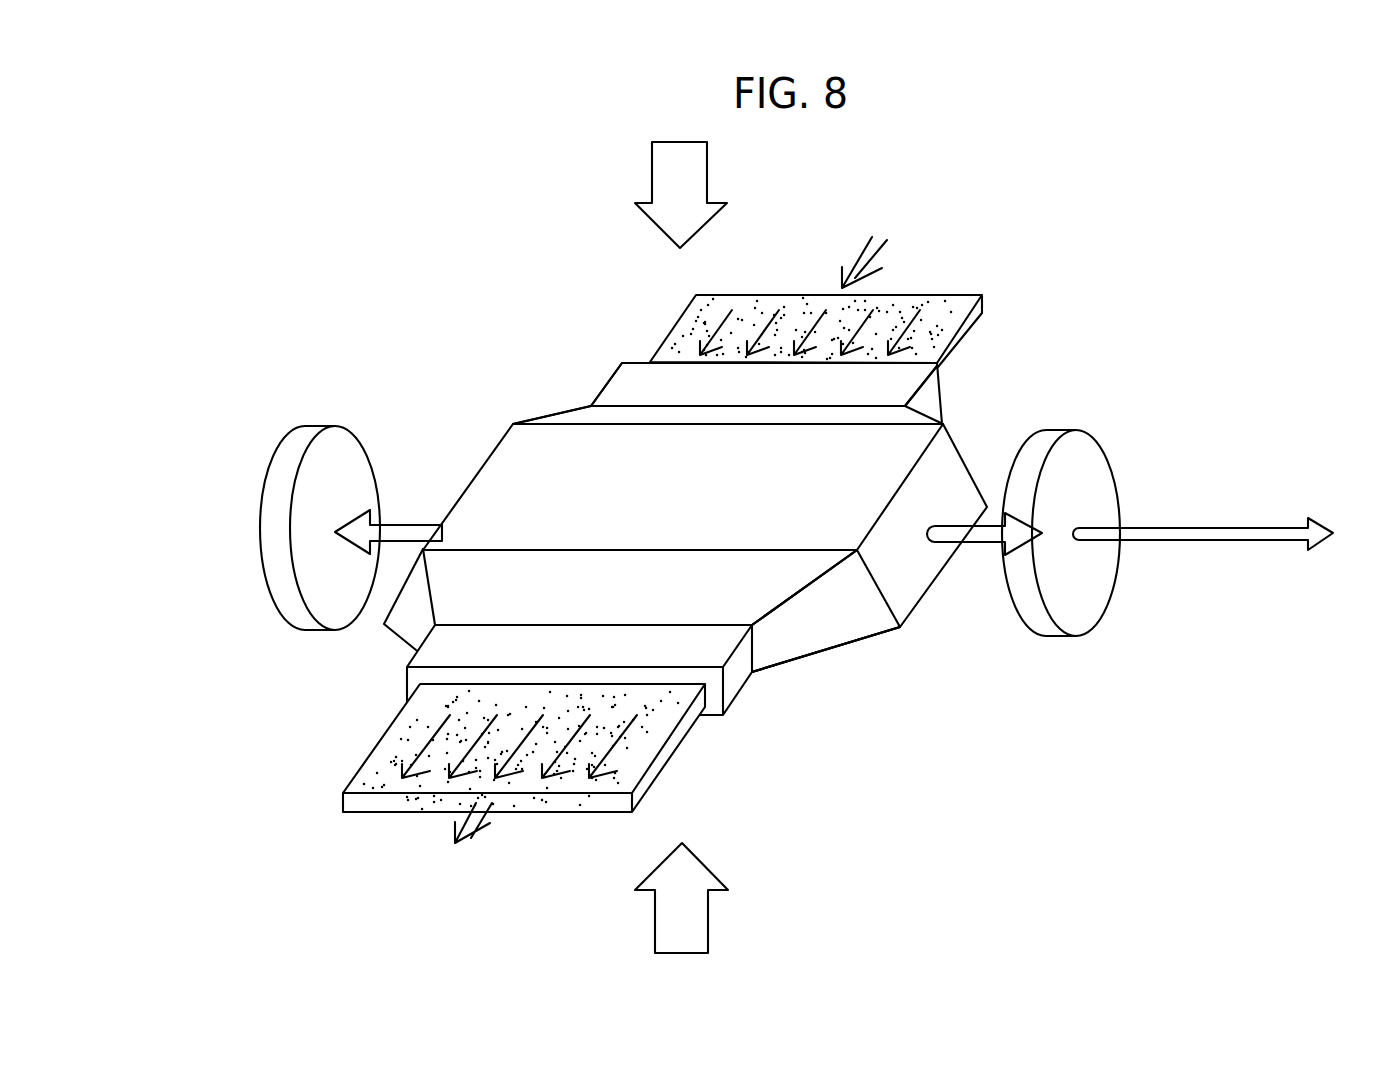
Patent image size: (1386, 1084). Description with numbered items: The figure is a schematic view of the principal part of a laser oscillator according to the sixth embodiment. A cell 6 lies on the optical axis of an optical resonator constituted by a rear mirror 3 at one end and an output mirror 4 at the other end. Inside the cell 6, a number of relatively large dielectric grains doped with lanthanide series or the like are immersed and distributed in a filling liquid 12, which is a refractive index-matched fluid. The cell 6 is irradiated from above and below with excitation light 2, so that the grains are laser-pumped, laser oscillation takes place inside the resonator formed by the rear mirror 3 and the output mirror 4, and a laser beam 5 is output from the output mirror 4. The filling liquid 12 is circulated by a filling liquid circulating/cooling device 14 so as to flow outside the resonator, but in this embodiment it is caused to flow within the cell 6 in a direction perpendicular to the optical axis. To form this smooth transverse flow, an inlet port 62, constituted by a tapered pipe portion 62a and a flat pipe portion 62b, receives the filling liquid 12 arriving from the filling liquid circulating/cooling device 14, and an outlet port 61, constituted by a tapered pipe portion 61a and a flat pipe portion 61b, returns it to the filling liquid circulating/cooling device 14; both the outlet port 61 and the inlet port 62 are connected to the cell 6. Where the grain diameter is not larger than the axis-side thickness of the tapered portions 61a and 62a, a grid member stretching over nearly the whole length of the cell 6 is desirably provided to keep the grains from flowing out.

The excitation light 2 is at (662, 175).
The rear mirror 3 is at (303, 437).
The output mirror 4 is at (1044, 437).
The laser beam 5 is at (1182, 541).
The cell 6 is at (915, 577).
The filling liquid 12 is at (390, 768).
The filling liquid circulating/cooling device 14 is at (855, 566).
The outlet port 61 is at (888, 665).
The tapered pipe portion 61a is at (787, 638).
The flat pipe portion 61b is at (760, 688).
The inlet port 62 is at (499, 263).
The tapered pipe portion 62a is at (573, 417).
The flat pipe portion 62b is at (647, 378).